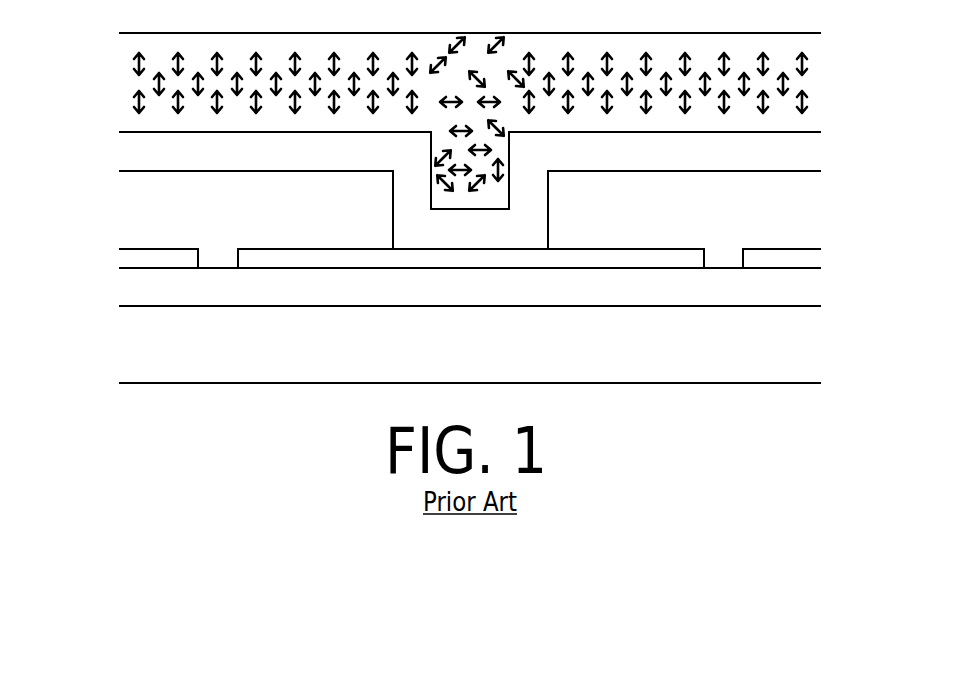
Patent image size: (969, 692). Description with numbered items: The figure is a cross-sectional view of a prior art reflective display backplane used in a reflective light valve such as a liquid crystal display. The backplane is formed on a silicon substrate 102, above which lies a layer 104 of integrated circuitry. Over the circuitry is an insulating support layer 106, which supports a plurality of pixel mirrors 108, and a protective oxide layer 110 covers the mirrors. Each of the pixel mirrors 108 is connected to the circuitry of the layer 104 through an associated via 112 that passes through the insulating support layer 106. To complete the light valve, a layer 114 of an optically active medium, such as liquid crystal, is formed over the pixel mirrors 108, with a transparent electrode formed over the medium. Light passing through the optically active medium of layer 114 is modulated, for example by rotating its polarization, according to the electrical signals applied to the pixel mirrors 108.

The silicon substrate 102 is at (802, 343).
The layer of integrated circuitry 104 is at (810, 295).
The insulating support layer 106 is at (130, 262).
The pixel mirrors 108 is at (148, 232).
The protective oxide layer 110 is at (125, 145).
The via 112 is at (218, 260).
The layer of optically active medium 114 is at (810, 40).